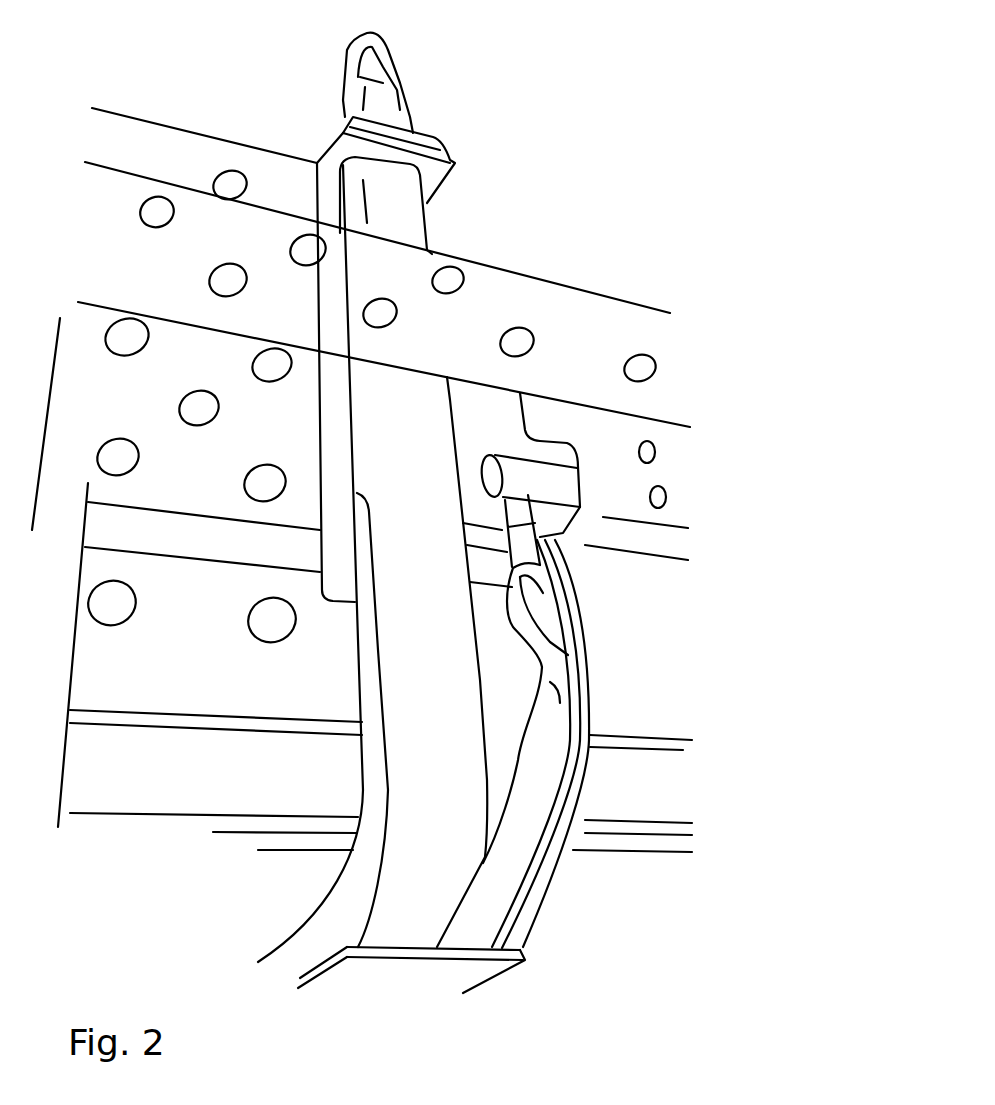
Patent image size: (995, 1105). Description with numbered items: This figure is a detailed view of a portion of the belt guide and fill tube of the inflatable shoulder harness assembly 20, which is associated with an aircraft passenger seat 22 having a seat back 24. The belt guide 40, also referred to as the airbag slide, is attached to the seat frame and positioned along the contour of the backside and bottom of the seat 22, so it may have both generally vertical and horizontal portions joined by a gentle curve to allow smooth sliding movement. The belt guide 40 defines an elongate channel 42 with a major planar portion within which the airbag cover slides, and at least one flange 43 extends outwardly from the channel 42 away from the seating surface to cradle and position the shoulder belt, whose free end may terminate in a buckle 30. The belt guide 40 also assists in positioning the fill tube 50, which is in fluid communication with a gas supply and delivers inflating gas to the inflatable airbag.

The inflatable shoulder harness assembly 20 is at (553, 160).
The aircraft passenger seat 22 is at (193, 132).
The seat back 24 is at (88, 391).
The buckle 30 is at (398, 70).
The belt guide 40 is at (450, 410).
The elongate channel 42 is at (430, 707).
The flange 43 is at (342, 920).
The fill tube 50 is at (513, 882).